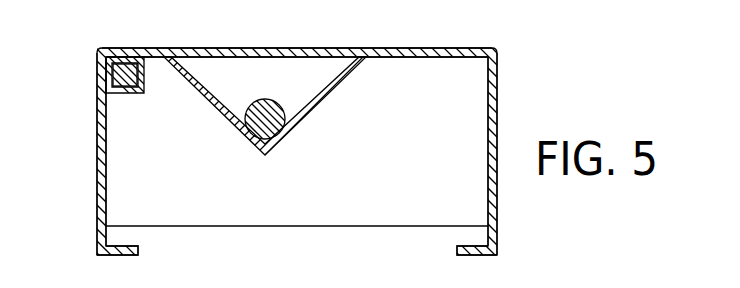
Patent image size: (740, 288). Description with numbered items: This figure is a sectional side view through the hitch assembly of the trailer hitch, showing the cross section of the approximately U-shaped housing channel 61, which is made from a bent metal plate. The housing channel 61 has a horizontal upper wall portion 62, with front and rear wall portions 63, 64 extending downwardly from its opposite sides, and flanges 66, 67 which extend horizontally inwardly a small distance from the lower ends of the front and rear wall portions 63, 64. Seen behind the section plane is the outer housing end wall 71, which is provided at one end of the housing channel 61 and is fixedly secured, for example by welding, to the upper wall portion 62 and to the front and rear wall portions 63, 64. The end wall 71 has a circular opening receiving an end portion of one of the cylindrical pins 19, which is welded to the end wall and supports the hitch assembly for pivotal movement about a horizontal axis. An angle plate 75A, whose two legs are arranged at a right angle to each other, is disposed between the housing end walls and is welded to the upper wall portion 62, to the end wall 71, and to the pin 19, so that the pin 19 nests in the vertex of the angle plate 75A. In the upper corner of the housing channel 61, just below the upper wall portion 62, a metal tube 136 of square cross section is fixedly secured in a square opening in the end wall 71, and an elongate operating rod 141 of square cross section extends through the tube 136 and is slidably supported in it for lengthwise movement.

The housing channel 61 is at (96, 255).
The upper wall portion 62 is at (297, 54).
The front wall portion 63 is at (97, 162).
The rear wall portion 64 is at (497, 218).
The flange 66 is at (123, 248).
The flange 67 is at (470, 249).
The outer housing end wall 71 is at (433, 132).
The angle plate 75A is at (204, 78).
The cylindrical pin 19 is at (266, 108).
The metal tube 136 is at (125, 90).
The operating rod 141 is at (140, 93).